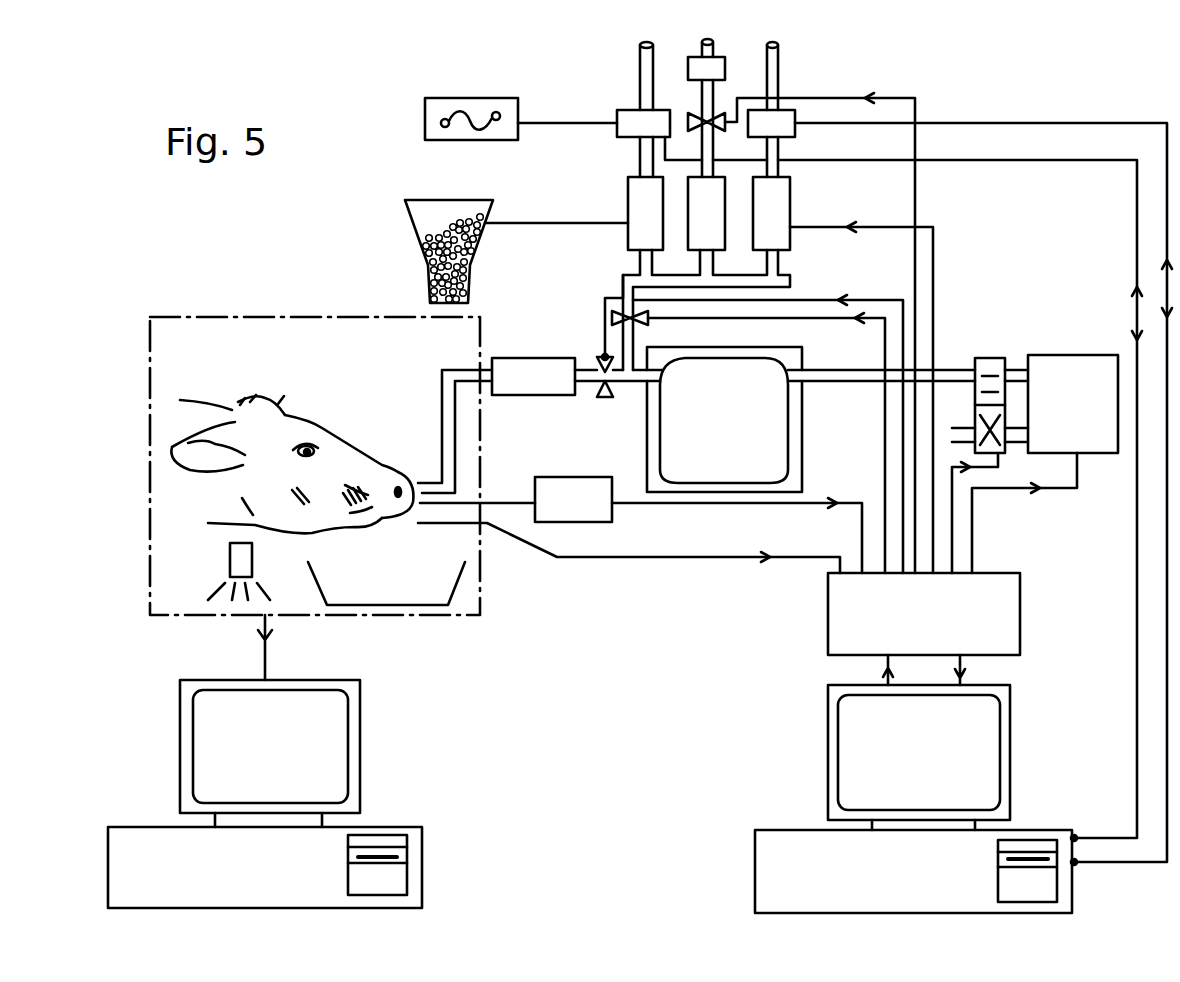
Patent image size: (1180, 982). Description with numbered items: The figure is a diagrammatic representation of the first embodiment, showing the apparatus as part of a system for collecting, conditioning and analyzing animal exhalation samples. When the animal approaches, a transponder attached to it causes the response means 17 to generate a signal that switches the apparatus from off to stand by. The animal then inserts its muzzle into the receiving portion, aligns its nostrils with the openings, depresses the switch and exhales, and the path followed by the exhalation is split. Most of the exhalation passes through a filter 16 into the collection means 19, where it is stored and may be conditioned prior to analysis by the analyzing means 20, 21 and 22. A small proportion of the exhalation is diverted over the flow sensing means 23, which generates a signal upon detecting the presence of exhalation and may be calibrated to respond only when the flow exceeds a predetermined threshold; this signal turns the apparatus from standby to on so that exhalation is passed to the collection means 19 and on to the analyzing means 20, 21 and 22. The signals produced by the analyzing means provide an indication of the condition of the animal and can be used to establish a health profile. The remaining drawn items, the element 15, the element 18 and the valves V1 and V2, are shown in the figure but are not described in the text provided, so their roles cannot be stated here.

The sensor / detector 15 is at (230, 563).
The filter 16 is at (530, 358).
The response means 17 is at (802, 432).
The first dosing device 18 is at (631, 110).
The collection means 19 is at (688, 60).
The analyzing means 20 is at (790, 100).
The analyzing means 21 is at (575, 477).
The analyzing means 22 is at (468, 98).
The flow sensing means 23 is at (1010, 757).
The valve V1 is at (605, 397).
The valve V2 is at (646, 321).